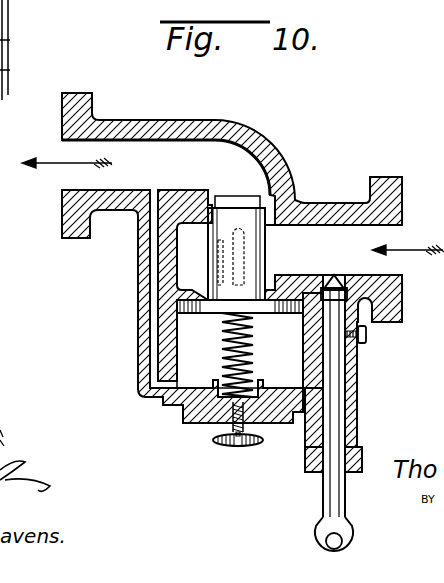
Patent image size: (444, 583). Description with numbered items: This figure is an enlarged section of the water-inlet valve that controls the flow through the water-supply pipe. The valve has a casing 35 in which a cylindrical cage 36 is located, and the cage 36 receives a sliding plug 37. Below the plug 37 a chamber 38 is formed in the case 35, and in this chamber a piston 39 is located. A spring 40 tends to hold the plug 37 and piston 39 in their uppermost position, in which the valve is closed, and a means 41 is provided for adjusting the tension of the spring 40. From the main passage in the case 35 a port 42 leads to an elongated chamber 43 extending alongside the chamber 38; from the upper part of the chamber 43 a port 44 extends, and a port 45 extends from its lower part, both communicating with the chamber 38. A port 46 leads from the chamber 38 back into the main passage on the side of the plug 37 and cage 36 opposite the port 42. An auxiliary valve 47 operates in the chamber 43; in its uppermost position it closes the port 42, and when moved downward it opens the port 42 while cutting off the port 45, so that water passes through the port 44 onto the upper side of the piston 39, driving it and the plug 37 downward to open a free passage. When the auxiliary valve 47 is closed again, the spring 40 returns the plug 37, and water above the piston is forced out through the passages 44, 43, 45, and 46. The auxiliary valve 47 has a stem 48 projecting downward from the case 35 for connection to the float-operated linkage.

The casing 35 is at (279, 153).
The cylindrical cage 36 is at (275, 248).
The sliding plug 37 is at (228, 248).
The chamber 38 is at (250, 340).
The piston 39 is at (221, 313).
The spring 40 is at (249, 335).
The means for adjusting the tension of the spring 41 is at (240, 446).
The port 42 is at (347, 255).
The elongated chamber 43 is at (357, 360).
The port 44 is at (313, 298).
The port 45 is at (306, 406).
The port 46 is at (150, 328).
The auxiliary valve 47 is at (349, 290).
The stem 48 is at (346, 403).